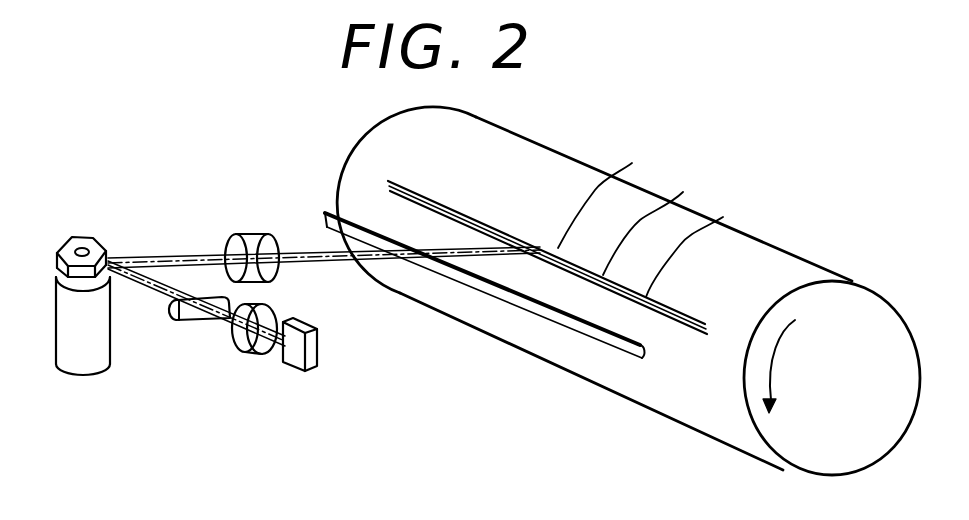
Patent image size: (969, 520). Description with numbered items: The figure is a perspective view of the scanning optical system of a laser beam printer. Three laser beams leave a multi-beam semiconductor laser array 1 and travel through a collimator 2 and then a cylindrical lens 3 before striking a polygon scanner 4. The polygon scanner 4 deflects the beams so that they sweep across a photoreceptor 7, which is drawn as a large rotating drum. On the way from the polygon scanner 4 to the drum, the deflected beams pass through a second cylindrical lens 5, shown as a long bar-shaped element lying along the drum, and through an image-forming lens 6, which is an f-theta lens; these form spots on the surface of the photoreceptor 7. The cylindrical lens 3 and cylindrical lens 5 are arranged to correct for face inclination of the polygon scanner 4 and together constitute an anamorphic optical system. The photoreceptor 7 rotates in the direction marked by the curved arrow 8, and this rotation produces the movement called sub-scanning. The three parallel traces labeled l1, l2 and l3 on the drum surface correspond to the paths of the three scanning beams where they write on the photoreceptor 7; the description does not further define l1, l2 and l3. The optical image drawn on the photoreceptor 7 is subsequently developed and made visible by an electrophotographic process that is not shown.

The multi-beam semiconductor laser array 1 is at (293, 358).
The collimator 2 is at (248, 352).
The cylindrical lens 3 is at (183, 311).
The polygon scanner 4 is at (70, 358).
The cylindrical lens 5 is at (334, 207).
The image-forming lens 6 is at (259, 233).
The photoreceptor 7 is at (678, 407).
The rotation direction 8 is at (778, 344).
The scanning line l1 is at (610, 195).
The scanning line l2 is at (658, 221).
The scanning line l3 is at (698, 242).